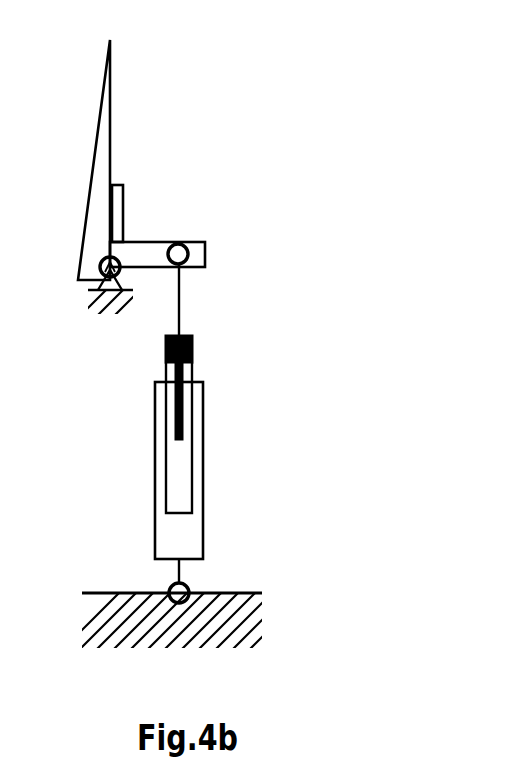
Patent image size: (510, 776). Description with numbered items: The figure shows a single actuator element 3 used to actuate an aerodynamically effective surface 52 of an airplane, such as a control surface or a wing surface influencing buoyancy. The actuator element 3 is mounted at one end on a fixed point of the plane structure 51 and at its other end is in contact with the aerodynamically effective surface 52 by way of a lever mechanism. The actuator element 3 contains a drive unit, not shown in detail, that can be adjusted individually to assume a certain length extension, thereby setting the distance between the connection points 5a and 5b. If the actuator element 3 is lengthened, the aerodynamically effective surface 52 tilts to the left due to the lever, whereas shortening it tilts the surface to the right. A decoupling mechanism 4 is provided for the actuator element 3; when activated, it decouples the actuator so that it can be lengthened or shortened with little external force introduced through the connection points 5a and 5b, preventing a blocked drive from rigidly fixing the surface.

The aerodynamically effective surface 52 is at (110, 102).
The connection point 5a is at (180, 255).
The decoupling mechanism 4 is at (193, 350).
The actuator element 3 is at (190, 533).
The connection point 5b is at (172, 586).
The plane structure 51 is at (245, 627).